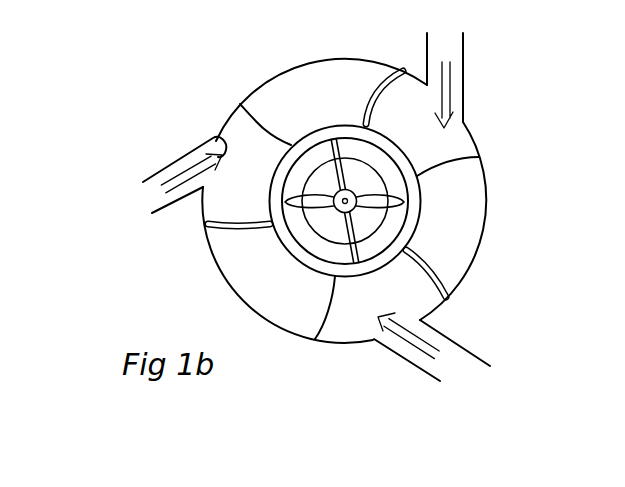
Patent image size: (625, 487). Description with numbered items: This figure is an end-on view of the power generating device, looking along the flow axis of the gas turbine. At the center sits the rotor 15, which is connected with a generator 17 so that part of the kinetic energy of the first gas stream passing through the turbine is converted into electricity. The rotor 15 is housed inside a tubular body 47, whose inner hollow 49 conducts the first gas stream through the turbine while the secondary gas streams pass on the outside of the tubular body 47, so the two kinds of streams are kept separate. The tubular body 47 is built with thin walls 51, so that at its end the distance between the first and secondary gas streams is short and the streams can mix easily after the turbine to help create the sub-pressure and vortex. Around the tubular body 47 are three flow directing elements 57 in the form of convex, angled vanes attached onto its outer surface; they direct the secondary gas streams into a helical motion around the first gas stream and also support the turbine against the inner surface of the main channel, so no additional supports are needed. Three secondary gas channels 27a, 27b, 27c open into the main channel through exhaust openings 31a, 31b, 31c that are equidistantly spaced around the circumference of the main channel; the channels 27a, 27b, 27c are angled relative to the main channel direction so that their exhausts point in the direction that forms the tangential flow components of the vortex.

The rotor 15 is at (279, 197).
The generator 17 is at (343, 207).
The inner hollow 49 is at (346, 148).
The thin walls 51 is at (418, 190).
The tubular body 47 is at (418, 207).
The flow directing elements 57 is at (430, 267).
The secondary gas channel 27a is at (215, 137).
The secondary gas channel 27b is at (449, 360).
The secondary gas channel 27c is at (450, 43).
The exhaust opening 31a is at (159, 196).
The exhaust opening 31b is at (390, 340).
The exhaust opening 31c is at (437, 98).